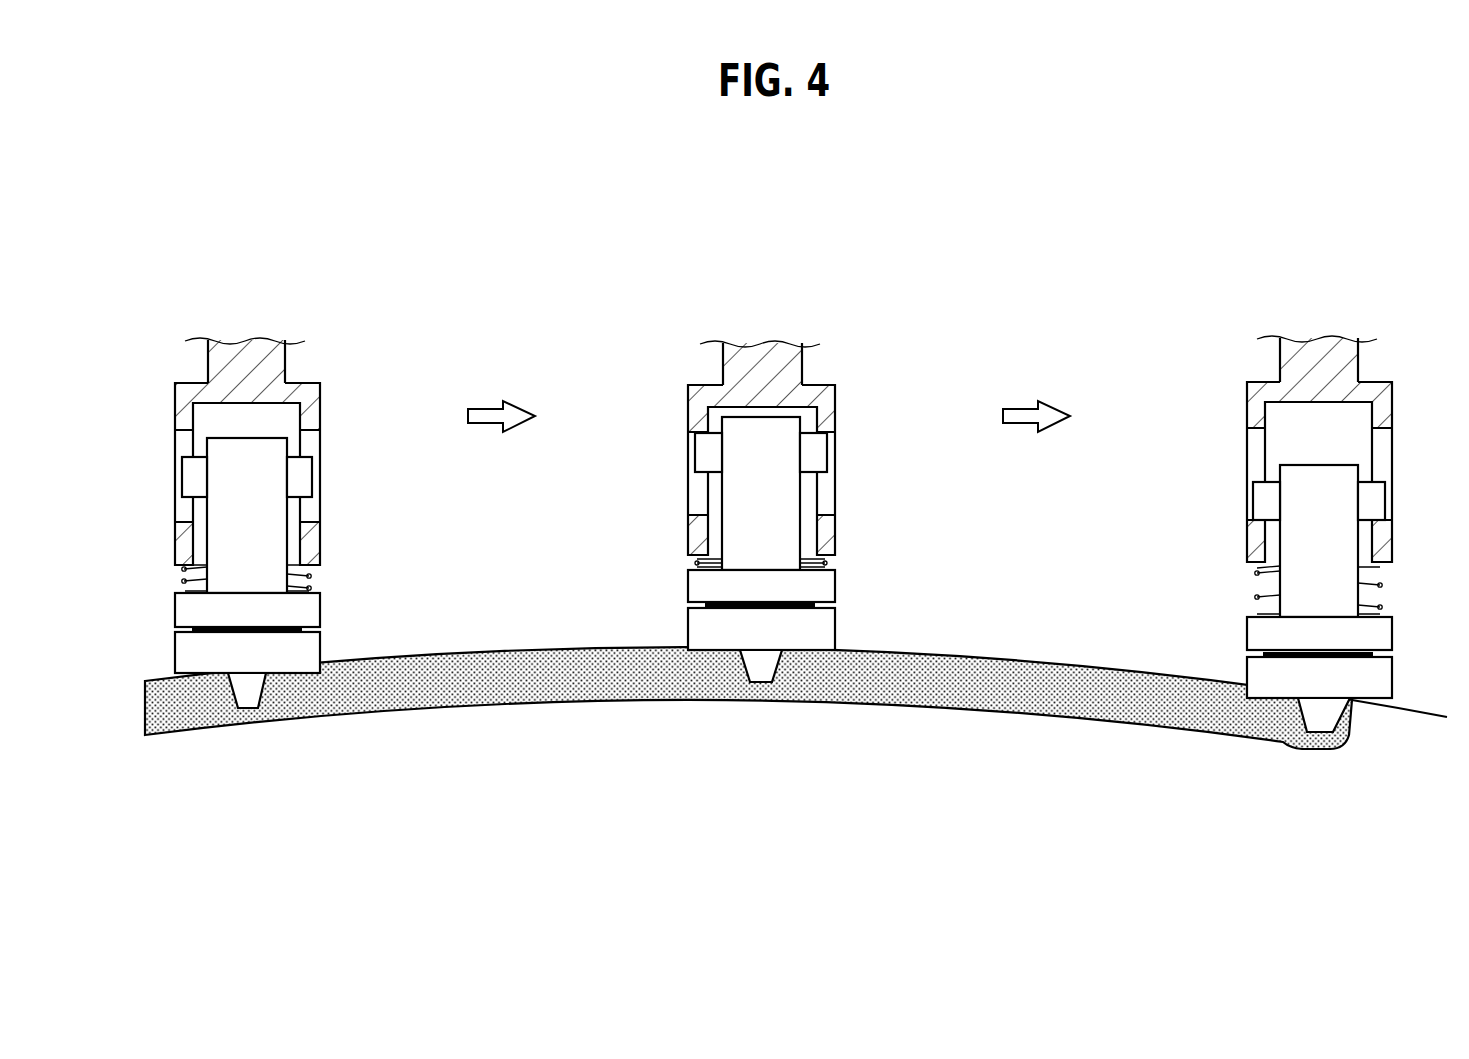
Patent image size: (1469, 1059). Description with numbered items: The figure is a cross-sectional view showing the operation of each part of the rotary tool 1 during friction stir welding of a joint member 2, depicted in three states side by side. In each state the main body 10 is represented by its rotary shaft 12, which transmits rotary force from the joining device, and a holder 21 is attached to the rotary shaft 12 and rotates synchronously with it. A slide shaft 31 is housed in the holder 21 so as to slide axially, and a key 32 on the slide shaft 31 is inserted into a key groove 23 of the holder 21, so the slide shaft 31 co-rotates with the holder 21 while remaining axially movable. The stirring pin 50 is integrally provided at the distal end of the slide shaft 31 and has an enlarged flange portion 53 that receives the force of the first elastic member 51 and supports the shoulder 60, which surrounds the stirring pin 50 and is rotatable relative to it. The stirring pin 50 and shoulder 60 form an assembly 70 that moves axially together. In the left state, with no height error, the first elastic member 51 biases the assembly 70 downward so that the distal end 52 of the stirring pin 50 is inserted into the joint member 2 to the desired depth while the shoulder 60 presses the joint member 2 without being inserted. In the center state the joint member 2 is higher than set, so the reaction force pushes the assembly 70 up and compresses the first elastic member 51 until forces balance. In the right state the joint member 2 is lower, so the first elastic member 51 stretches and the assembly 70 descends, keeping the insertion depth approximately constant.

The rotary tool 1 is at (357, 162).
The joint member 2 is at (535, 770).
The main body 10 is at (366, 357).
The rotary shaft 12 is at (272, 363).
The holder 21 is at (312, 420).
The key groove 23 is at (178, 443).
The slide shaft 31 is at (237, 530).
The key 32 is at (190, 476).
The stirring pin 50 is at (260, 685).
The first elastic member 51 is at (183, 582).
The distal end 52 is at (237, 703).
The flange portion 53 is at (310, 612).
The shoulder 60 is at (307, 648).
The assembly 70 is at (813, 719).